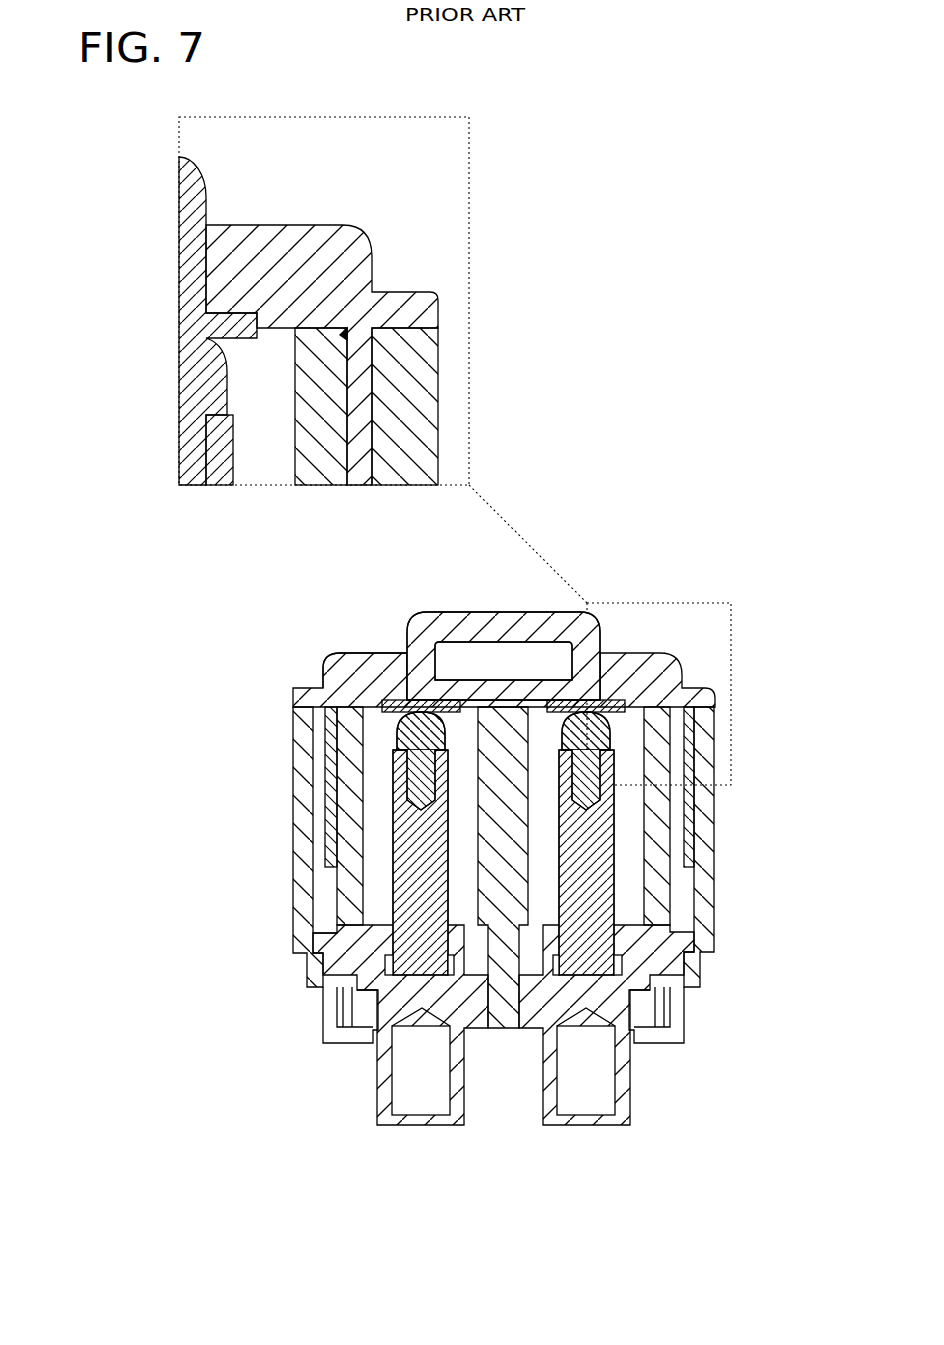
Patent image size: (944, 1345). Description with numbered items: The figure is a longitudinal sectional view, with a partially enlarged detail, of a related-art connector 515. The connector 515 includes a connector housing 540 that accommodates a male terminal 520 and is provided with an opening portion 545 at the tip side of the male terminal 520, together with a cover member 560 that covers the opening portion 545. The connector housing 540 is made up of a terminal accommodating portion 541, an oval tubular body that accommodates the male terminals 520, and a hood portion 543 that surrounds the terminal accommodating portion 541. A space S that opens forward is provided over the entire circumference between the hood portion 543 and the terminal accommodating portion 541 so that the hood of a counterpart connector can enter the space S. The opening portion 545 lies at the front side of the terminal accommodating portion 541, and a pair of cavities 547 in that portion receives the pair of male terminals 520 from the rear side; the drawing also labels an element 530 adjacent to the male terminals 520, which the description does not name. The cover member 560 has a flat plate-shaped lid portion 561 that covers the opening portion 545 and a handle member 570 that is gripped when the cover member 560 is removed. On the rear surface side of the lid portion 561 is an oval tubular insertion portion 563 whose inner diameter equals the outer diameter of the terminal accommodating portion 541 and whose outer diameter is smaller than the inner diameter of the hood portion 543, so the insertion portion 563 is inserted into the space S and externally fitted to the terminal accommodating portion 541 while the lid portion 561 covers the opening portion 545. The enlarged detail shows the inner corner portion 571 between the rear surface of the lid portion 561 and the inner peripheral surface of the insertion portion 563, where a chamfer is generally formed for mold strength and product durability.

The connector 515 is at (507, 799).
The male terminal 520 is at (238, 447).
The terminal 530 is at (222, 384).
The connector housing 540 is at (718, 855).
The terminal accommodating portion 541 is at (327, 422).
The hood portion 543 is at (292, 850).
The opening portion 545 is at (347, 662).
The cavities 547 is at (545, 955).
The cover member 560 is at (352, 222).
The lid portion 561 is at (368, 668).
The insertion portion 563 is at (362, 456).
The handle member 570 is at (480, 610).
The inner corner portion 571 is at (346, 342).
The space S is at (328, 918).